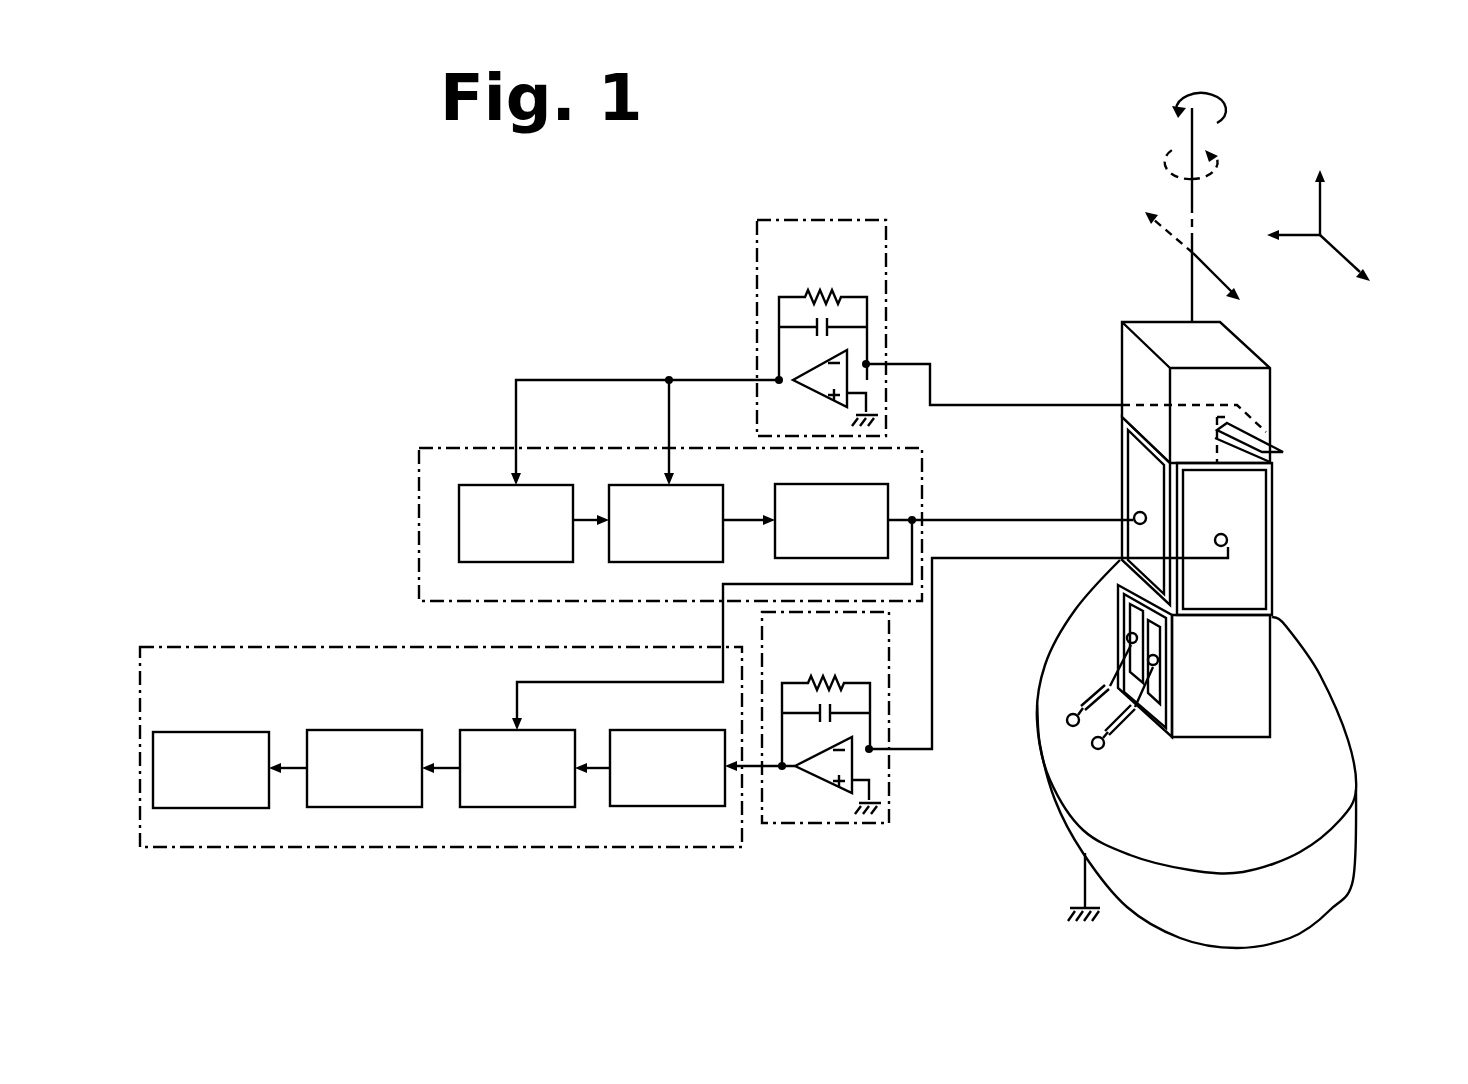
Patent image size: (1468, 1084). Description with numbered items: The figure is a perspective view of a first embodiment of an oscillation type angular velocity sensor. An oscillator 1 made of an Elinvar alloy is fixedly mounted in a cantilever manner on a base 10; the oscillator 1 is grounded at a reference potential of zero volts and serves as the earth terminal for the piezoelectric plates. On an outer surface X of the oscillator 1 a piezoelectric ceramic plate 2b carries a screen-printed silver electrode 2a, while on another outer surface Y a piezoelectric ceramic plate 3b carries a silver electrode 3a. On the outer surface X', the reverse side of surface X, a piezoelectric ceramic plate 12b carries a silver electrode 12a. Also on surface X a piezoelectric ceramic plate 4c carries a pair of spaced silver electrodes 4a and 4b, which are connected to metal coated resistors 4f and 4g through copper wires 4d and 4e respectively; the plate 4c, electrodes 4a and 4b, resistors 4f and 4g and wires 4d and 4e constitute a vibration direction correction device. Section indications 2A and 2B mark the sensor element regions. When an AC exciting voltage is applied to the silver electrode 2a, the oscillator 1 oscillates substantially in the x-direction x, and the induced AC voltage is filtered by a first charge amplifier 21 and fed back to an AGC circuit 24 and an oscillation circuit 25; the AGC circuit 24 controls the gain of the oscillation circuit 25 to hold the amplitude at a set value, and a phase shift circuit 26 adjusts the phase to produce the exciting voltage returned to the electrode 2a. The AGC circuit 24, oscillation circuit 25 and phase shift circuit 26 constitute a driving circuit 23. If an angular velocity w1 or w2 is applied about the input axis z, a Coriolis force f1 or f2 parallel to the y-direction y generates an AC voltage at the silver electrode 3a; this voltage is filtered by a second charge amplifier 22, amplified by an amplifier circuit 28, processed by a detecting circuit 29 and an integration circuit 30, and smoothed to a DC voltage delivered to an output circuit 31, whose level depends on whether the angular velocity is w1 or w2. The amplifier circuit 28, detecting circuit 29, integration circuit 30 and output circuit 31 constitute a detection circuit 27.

The oscillator 1 is at (1110, 362).
The silver electrode 2a is at (1135, 480).
The piezoelectric ceramic plate 2b is at (1118, 428).
The section line 2A is at (1130, 510).
The section line 2B is at (1120, 665).
The silver electrode 3a is at (1250, 585).
The piezoelectric ceramic plate 3b is at (1275, 490).
The silver electrode 4a is at (1132, 628).
The silver electrode 4b is at (1155, 643).
The piezoelectric ceramic plate 4c is at (1120, 597).
The copper wire 4d is at (1127, 639).
The copper wire 4e is at (1150, 745).
The metal coated resistor 4f is at (1117, 684).
The metal coated resistor 4g is at (1135, 708).
The base 10 is at (1357, 825).
The silver electrode 12a is at (1285, 440).
The piezoelectric ceramic plate 12b is at (1240, 432).
The first charge amplifier 21 is at (852, 220).
The second charge amplifier 22 is at (868, 823).
The driving circuit 23 is at (428, 448).
The AGC circuit 24 is at (535, 545).
The oscillation circuit 25 is at (687, 545).
The phase shift circuit 26 is at (857, 544).
The detection circuit 27 is at (195, 647).
The amplifier circuit 28 is at (692, 791).
The detecting circuit 29 is at (543, 791).
The integration circuit 30 is at (388, 791).
The output circuit 31 is at (230, 791).
The outer surface X is at (1120, 223).
The outer surface X' is at (1315, 343).
The outer surface Y is at (1255, 713).
The angular velocity w1 is at (1226, 116).
The angular velocity w2 is at (1223, 155).
The Coriolis force f1 is at (1239, 293).
The Coriolis force f2 is at (1149, 213).
The x-direction x is at (1279, 231).
The y-direction y is at (1361, 272).
The input axis z is at (1315, 179).